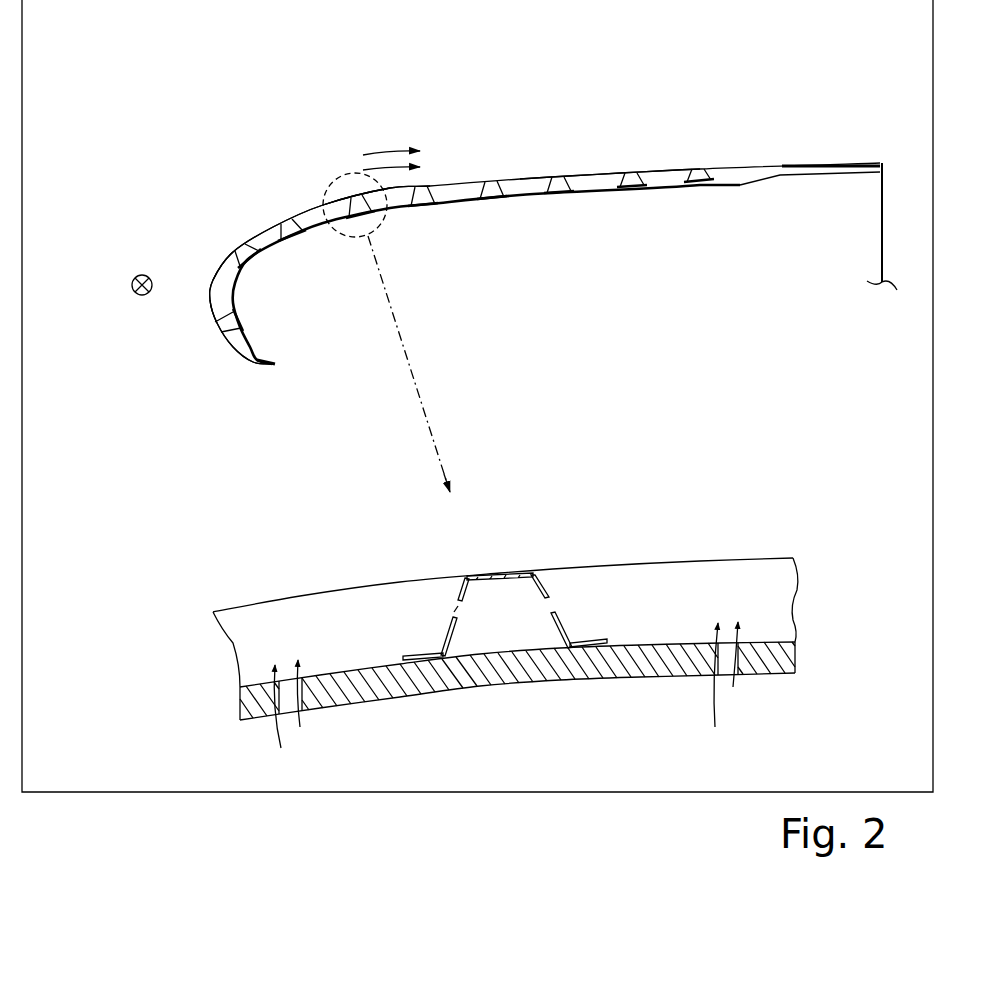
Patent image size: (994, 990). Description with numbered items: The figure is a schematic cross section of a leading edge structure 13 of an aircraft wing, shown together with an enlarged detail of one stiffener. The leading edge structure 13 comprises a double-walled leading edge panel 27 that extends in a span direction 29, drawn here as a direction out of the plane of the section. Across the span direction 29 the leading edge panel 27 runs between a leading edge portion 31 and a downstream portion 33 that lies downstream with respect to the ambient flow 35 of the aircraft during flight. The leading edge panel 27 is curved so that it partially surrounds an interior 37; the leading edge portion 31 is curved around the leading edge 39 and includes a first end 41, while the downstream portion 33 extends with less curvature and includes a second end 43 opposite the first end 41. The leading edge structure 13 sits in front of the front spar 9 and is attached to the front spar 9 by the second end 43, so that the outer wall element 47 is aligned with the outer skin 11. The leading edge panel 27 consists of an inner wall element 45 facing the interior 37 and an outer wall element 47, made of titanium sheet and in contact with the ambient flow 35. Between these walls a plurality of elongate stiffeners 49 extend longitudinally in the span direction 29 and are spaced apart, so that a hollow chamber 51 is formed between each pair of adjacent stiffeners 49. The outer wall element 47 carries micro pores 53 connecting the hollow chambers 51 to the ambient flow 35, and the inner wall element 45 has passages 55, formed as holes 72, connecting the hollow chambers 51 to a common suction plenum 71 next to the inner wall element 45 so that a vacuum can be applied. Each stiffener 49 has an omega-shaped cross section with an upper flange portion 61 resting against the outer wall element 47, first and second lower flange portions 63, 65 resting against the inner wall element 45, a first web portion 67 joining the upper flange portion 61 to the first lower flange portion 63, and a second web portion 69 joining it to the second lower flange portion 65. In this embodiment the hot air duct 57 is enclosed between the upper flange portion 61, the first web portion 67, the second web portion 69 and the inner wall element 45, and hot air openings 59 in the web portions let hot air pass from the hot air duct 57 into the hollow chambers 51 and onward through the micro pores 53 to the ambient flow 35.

The front spar 9 is at (883, 212).
The outer skin 11 is at (838, 163).
The leading edge structure 13 is at (232, 167).
The leading edge panel 27 is at (317, 203).
The span direction 29 is at (140, 275).
The leading edge portion 31 is at (212, 252).
The downstream portion 33 is at (556, 147).
The ambient flow 35 is at (378, 148).
The interior 37 is at (492, 739).
The leading edge 39 is at (207, 293).
The first end 41 is at (262, 367).
The second end 43 is at (737, 180).
The inner wall element 45 is at (400, 207).
The outer wall element 47 is at (272, 217).
The stiffeners 49 is at (557, 177).
The hollow chamber 51 is at (520, 188).
The micro pores 53 is at (331, 584).
The passages 55 is at (278, 723).
The hot air duct 57 is at (494, 609).
The hot air openings 59 is at (457, 607).
The upper flange portion 61 is at (505, 573).
The first lower flange portion 63 is at (405, 657).
The second lower flange portion 65 is at (598, 643).
The first web portion 67 is at (447, 636).
The second web portion 69 is at (553, 606).
The suction plenum 71 is at (275, 287).
The holes 72 is at (717, 691).